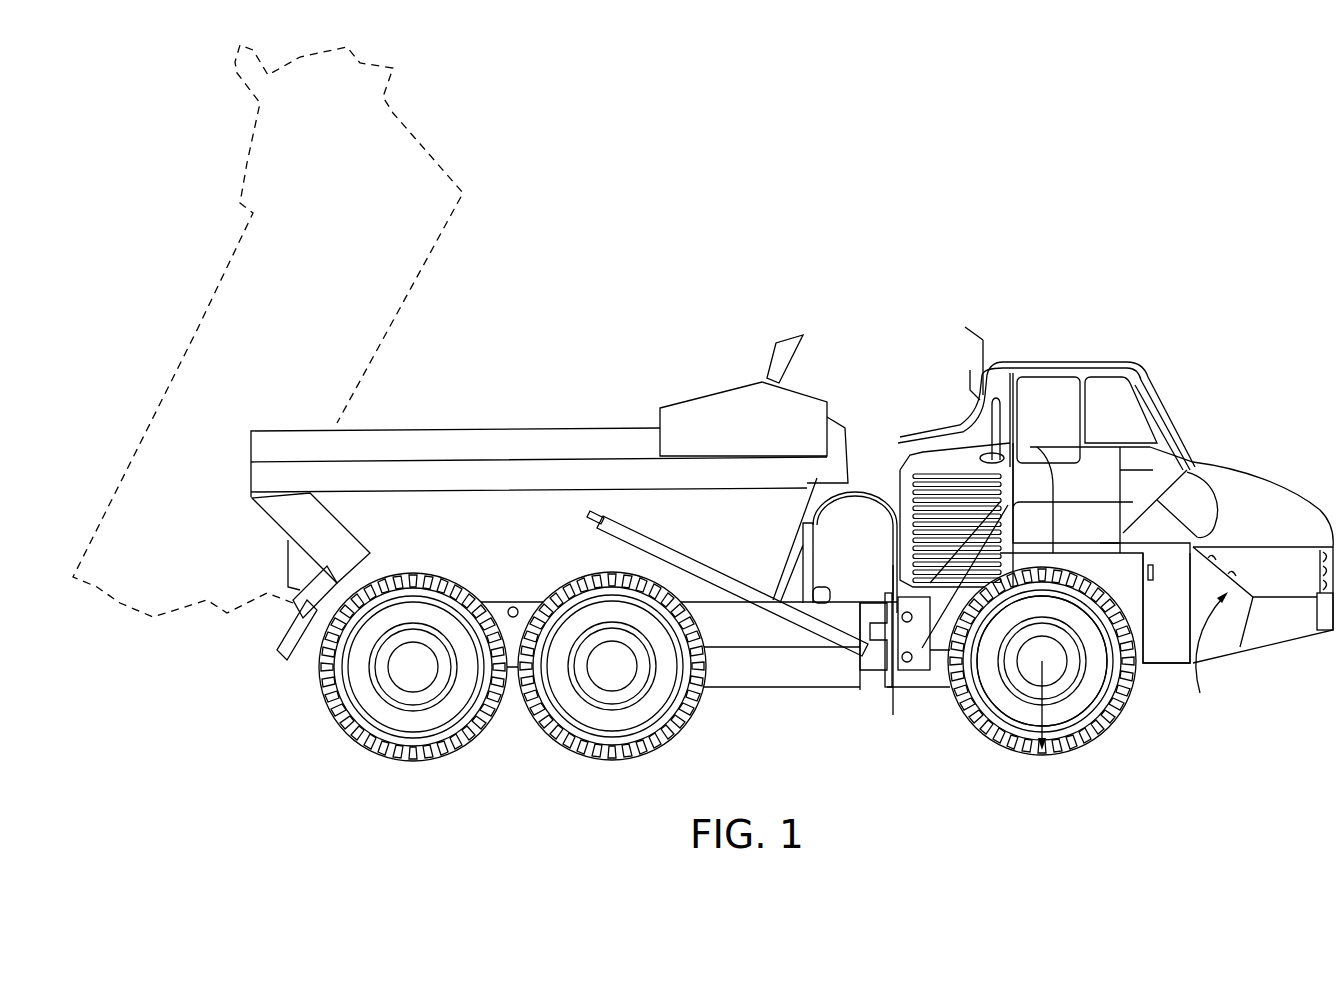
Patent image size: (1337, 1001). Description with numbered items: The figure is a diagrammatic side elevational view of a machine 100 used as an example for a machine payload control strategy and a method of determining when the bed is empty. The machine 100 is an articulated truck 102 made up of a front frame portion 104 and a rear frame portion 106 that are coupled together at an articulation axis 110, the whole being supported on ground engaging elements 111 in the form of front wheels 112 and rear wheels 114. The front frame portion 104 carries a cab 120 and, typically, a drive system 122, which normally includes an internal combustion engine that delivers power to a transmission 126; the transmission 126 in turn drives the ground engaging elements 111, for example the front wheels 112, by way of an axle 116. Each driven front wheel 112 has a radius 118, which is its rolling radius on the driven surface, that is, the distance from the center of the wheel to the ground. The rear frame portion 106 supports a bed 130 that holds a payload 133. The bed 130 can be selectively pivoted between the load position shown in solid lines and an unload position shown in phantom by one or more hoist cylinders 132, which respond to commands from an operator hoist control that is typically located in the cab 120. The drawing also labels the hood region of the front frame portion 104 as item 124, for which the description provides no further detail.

The machine 100 is at (686, 342).
The articulated truck 102 is at (919, 340).
The front frame portion 104 is at (1207, 654).
The rear frame portion 106 is at (795, 692).
The articulation axis 110 is at (893, 703).
The ground engaging elements 111 is at (430, 763).
The front wheels 112 is at (987, 657).
The rear wheels 114 is at (322, 683).
The axle 116 is at (1042, 661).
The radius 118 is at (1047, 712).
The cab 120 is at (1170, 412).
The drive system 122 is at (1232, 618).
The hood 124 is at (1263, 507).
The transmission 126 is at (1170, 643).
The bed 130 is at (500, 426).
The hoist cylinders 132 is at (680, 560).
The payload 133 is at (563, 426).